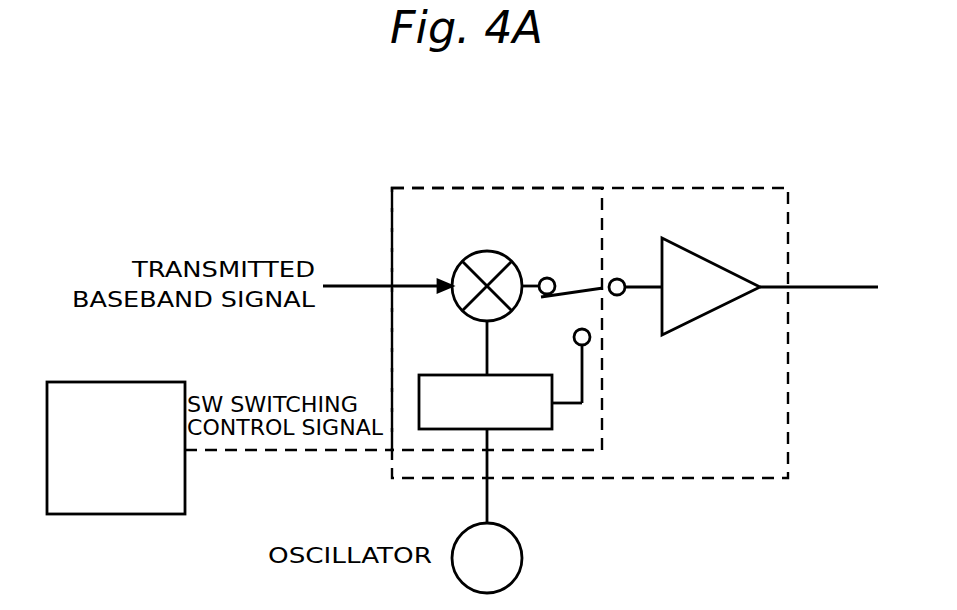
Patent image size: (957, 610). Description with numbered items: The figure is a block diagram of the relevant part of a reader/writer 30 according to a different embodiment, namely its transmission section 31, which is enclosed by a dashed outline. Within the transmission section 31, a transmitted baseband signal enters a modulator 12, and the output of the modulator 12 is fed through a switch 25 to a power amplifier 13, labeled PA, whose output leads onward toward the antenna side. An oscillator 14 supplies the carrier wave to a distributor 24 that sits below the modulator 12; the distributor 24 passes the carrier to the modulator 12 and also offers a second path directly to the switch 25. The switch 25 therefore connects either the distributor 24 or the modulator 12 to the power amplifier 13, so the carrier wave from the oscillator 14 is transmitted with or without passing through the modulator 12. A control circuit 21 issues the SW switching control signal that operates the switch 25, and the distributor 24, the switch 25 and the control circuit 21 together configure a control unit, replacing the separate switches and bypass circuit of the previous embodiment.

The modulator 12 is at (470, 255).
The power amplifier 13 is at (698, 253).
The oscillator 14 is at (522, 556).
The control circuit 21 is at (107, 515).
The distributor 24 is at (450, 375).
The switch 25 is at (580, 290).
The reader/writer 30 is at (369, 157).
The transmission section 31 is at (690, 188).